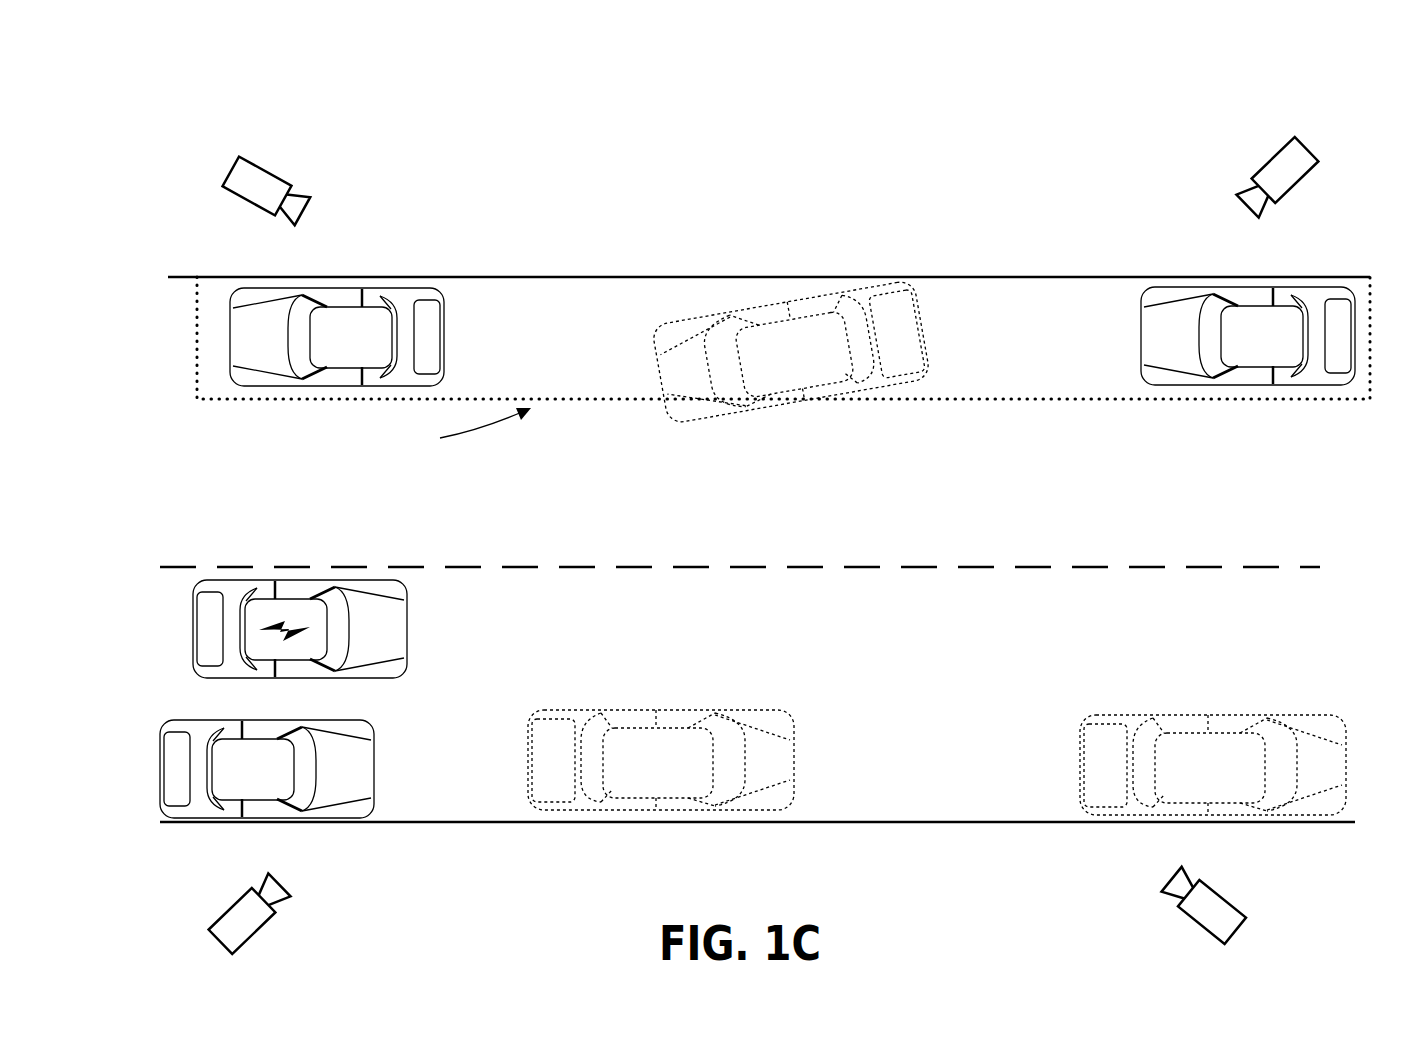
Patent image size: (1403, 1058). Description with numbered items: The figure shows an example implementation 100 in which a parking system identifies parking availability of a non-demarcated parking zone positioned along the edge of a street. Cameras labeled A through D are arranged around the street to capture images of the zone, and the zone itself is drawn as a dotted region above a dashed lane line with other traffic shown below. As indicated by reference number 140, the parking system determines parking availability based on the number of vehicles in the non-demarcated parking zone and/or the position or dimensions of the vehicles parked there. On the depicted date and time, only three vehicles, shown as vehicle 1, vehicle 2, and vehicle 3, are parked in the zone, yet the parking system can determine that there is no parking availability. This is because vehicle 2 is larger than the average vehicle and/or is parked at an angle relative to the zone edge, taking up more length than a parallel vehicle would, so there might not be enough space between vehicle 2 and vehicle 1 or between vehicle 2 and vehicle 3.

The example implementation 100 is at (240, 90).
The parking availability determination 140 is at (757, 172).
The vehicle 1 is at (337, 337).
The vehicle 2 is at (790, 352).
The vehicle 3 is at (1248, 336).